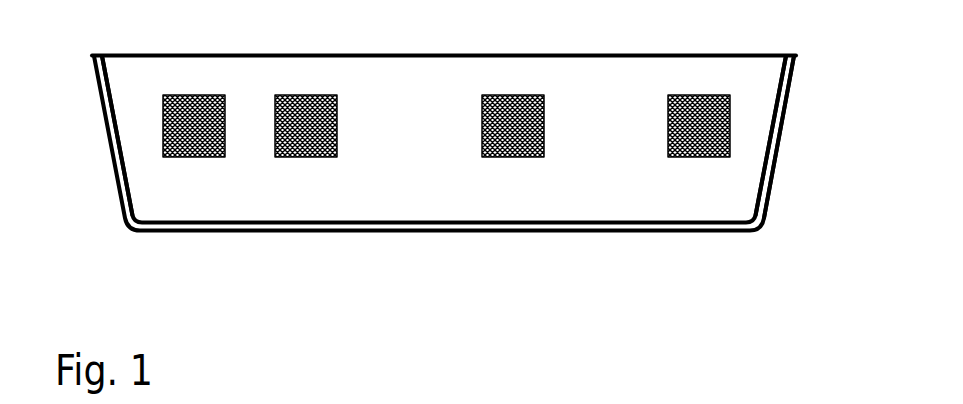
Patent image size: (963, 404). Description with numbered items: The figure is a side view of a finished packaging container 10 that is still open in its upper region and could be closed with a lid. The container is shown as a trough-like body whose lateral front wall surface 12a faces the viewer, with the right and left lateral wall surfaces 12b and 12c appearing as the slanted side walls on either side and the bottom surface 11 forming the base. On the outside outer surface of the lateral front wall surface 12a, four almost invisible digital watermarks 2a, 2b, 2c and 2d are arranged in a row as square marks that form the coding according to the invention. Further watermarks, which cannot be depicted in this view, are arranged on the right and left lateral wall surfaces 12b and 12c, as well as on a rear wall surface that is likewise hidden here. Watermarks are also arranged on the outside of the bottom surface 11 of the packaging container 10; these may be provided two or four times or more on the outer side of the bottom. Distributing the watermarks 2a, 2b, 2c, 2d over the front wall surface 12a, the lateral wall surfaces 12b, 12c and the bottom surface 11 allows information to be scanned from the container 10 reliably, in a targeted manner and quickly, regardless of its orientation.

The watermark 2a is at (205, 96).
The watermark 2b is at (315, 96).
The watermark 2c is at (520, 96).
The watermark 2d is at (703, 96).
The packaging container 10 is at (213, 233).
The bottom surface 11 is at (402, 233).
The lateral front wall surface 12a is at (763, 88).
The right lateral wall surface 12b is at (773, 167).
The left lateral wall surface 12c is at (116, 125).